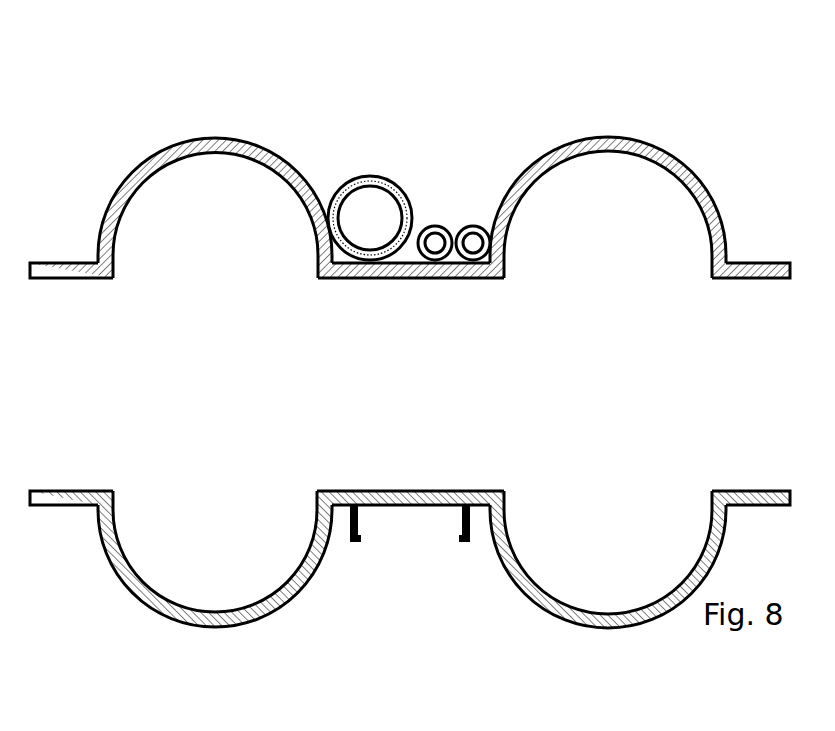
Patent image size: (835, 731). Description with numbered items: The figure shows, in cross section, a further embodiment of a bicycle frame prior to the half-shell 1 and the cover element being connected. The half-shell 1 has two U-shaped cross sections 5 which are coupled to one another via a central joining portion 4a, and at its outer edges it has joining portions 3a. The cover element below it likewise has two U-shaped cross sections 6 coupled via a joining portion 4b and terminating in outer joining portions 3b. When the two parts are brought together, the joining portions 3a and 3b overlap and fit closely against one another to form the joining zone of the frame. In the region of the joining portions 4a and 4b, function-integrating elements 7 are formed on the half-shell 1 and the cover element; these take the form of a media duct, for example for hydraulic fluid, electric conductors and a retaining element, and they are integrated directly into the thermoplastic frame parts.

The half-shell 1 is at (115, 128).
The joining portion 3a is at (70, 270).
The joining portion 3b is at (66, 490).
The joining portion 4a is at (404, 274).
The joining portion 4b is at (408, 490).
The U-shaped cross section 5 is at (230, 130).
The U-shaped cross section 6 is at (211, 638).
The function-integrating elements 7 is at (358, 172).